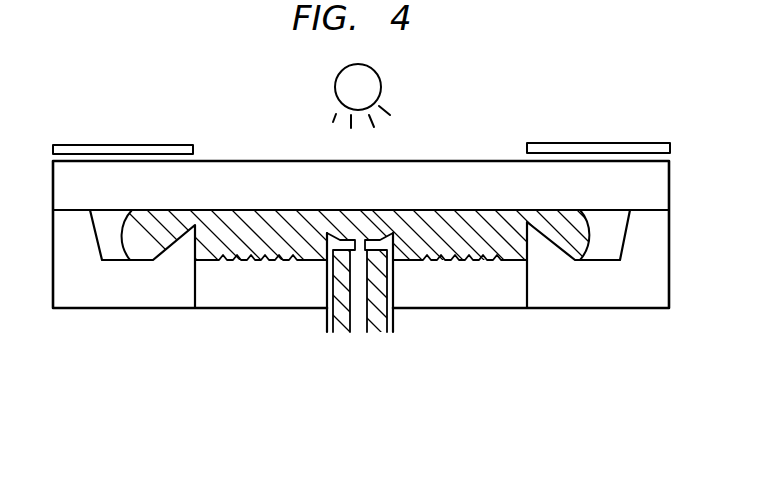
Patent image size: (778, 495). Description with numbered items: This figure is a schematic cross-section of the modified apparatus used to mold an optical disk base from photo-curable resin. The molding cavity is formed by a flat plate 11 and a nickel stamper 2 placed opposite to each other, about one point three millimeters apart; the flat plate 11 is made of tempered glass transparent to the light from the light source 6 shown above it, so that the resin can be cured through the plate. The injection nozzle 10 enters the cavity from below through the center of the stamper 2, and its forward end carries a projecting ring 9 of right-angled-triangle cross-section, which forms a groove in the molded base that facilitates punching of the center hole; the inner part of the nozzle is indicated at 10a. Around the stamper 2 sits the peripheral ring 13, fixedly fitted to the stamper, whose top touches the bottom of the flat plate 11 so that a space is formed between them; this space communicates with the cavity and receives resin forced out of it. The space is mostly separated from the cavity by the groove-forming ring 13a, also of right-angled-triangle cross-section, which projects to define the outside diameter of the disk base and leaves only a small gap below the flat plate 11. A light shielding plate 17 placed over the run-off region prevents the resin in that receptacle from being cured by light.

The nickel stamper 2 is at (509, 293).
The light source 6 is at (369, 88).
The projecting ring 9 is at (388, 232).
The injection nozzle 10 is at (390, 292).
The pin 10a is at (357, 283).
The flat plate 11 is at (470, 160).
The peripheral ring 13 is at (628, 292).
The groove-forming ring 13a is at (180, 250).
The light shielding plate 17 is at (566, 143).